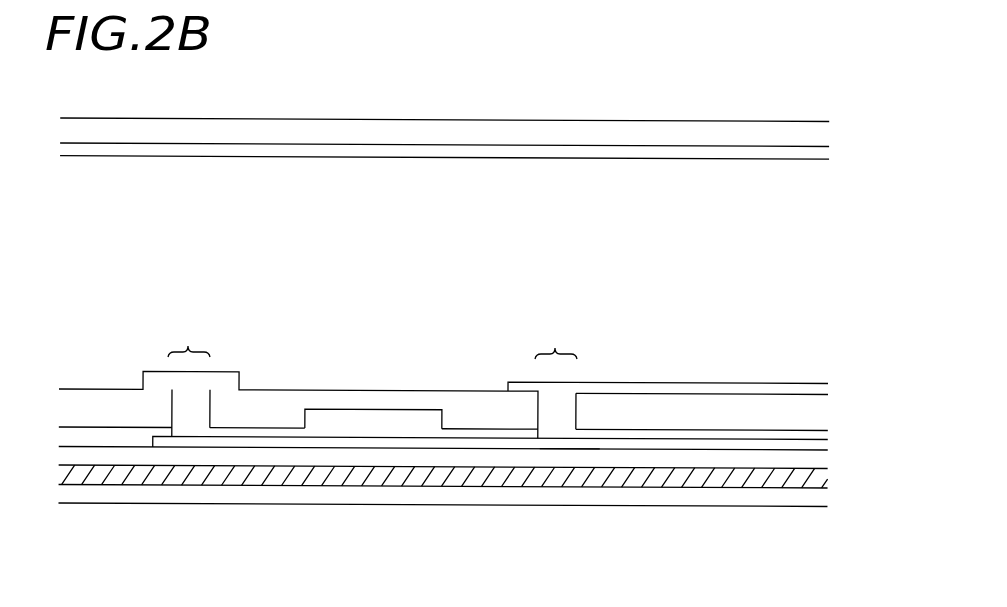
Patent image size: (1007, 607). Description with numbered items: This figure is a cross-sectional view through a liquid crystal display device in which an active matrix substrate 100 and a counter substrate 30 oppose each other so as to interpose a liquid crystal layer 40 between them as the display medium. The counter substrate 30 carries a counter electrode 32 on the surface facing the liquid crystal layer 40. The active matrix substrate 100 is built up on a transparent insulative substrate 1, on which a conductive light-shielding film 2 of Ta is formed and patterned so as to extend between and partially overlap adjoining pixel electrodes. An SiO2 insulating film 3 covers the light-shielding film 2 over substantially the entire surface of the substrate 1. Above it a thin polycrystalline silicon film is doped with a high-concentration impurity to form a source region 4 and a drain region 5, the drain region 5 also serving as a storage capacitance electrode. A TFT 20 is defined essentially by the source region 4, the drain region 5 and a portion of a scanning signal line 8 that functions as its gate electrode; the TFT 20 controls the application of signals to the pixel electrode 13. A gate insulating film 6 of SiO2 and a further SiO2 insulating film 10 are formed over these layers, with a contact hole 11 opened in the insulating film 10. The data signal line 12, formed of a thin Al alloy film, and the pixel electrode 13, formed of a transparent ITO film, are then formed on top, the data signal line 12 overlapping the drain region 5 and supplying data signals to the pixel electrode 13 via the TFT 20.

The transparent insulative substrate 1 is at (128, 498).
The conductive light-shielding film 2 is at (383, 482).
The insulating film 3 is at (522, 460).
The source region 4 is at (183, 455).
The drain region 5 is at (564, 458).
The gate insulating film 6 is at (288, 433).
The scanning signal line 8 is at (418, 422).
The insulating film 10 is at (767, 425).
The contact hole 11 is at (188, 347).
The data signal line 12 is at (226, 383).
The pixel electrode 13 is at (683, 388).
The TFT 20 is at (500, 367).
The counter substrate 30 is at (505, 138).
The counter electrode 32 is at (672, 150).
The liquid crystal layer 40 is at (776, 261).
The active matrix substrate 100 is at (845, 383).